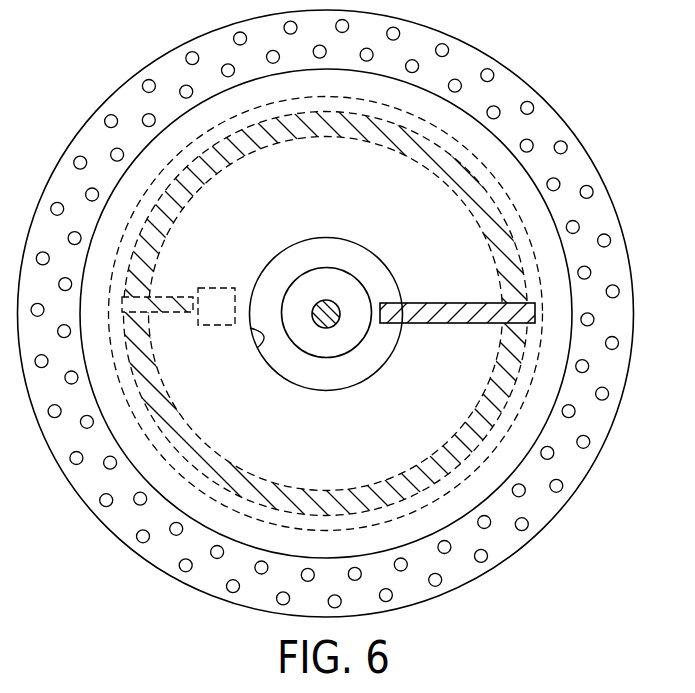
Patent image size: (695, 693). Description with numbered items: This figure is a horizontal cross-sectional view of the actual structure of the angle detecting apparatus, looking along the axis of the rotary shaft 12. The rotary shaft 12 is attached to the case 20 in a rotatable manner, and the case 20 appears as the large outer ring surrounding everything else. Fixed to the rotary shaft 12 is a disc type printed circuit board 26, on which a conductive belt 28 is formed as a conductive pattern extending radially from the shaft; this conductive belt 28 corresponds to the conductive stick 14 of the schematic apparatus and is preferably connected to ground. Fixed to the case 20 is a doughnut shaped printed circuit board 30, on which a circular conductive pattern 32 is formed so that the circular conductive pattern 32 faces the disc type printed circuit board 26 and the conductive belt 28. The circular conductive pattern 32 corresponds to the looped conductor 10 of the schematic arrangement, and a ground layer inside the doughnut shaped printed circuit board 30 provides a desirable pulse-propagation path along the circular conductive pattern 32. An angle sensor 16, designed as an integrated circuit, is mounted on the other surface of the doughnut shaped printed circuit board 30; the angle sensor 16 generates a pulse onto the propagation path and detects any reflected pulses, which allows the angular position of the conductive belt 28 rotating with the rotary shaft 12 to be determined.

The case 20 is at (623, 313).
The disc type printed circuit board 26 is at (488, 170).
The circular conductive pattern 32 is at (347, 346).
The looped conductor 10 is at (500, 403).
The conductive belt 28 is at (465, 343).
The conductive stick 14 is at (450, 323).
The angle sensor 16 is at (217, 287).
The doughnut shaped printed circuit board 30 is at (262, 348).
The rotary shaft 12 is at (328, 329).